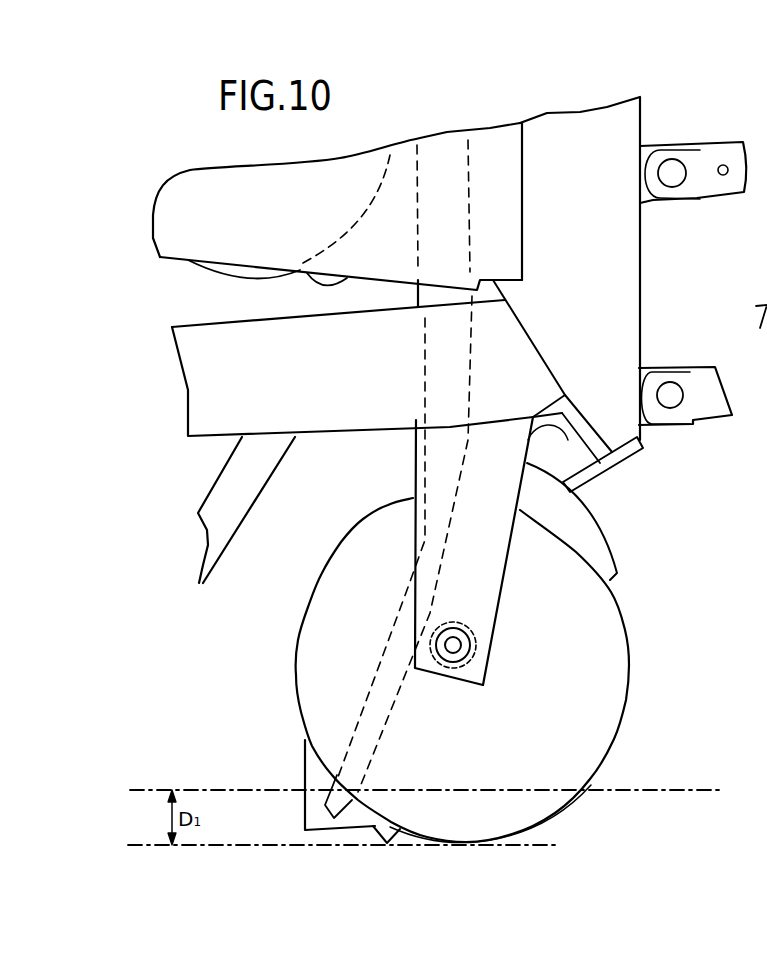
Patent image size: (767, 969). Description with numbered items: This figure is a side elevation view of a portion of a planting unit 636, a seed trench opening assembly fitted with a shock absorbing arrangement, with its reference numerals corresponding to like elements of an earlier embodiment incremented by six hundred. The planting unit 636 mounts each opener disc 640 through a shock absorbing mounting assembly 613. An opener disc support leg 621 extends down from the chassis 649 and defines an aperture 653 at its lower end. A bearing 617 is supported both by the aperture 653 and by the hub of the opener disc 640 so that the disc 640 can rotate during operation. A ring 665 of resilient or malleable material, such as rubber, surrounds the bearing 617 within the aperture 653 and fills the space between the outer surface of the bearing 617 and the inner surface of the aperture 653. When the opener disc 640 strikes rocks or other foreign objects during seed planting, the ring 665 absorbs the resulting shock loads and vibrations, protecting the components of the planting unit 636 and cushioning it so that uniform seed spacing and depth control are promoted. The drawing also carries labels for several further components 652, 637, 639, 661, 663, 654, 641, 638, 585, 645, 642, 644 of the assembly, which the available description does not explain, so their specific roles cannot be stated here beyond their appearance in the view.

The planting unit 636 is at (586, 56).
The pivot shank housing 652 is at (390, 158).
The housing end 637 is at (168, 263).
The mounting block 639 is at (594, 178).
The upper mounting bracket 661 is at (714, 200).
The lower mounting bracket 663 is at (715, 422).
The support plate 654 is at (420, 342).
The chassis 649 is at (188, 438).
The shock absorbing mounting assembly 613 is at (370, 597).
The opener disc support leg 621 is at (503, 593).
The ring 665 is at (436, 680).
The bearing 617 is at (476, 641).
The aperture 653 is at (450, 614).
The opener disc 640 is at (629, 642).
The wheel tread 641 is at (527, 823).
The ground surface line 638 is at (635, 762).
The reference line 585 is at (660, 797).
The scraper plate 645 is at (284, 846).
The scraper tip 642 is at (390, 845).
The scraper mount 644 is at (303, 810).